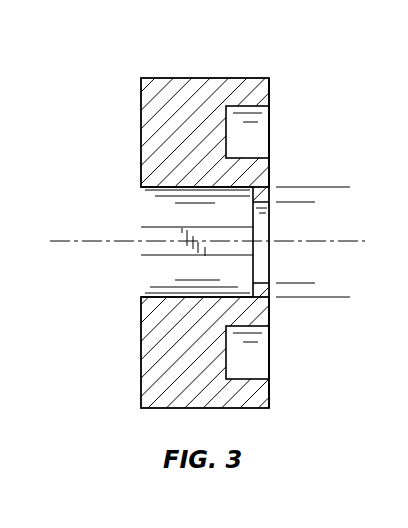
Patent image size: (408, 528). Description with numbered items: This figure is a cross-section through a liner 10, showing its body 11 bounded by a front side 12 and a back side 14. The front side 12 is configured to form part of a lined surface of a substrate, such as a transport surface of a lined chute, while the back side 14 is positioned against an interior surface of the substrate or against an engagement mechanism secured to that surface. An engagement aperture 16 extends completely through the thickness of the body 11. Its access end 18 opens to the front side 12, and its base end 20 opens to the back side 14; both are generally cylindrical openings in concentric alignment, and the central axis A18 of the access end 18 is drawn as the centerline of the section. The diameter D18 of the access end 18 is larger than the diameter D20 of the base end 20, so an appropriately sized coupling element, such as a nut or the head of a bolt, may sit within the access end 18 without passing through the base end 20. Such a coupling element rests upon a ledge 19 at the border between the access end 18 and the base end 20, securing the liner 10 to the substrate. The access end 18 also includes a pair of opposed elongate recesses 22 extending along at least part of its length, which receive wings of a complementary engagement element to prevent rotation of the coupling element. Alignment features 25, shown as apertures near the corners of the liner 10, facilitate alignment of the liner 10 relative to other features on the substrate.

The liner 10 is at (268, 57).
The body 11 is at (181, 108).
The front side 12 is at (141, 359).
The back side 14 is at (269, 391).
The engagement aperture 16 is at (132, 220).
The access end 18 is at (141, 161).
The ledge 19 is at (217, 196).
The base end 20 is at (258, 196).
The elongate recesses 22 is at (163, 245).
The alignment features 25 is at (248, 131).
The central axis of access end A18 is at (70, 241).
The diameter of access end D18 is at (302, 202).
The diameter of base end D20 is at (346, 187).